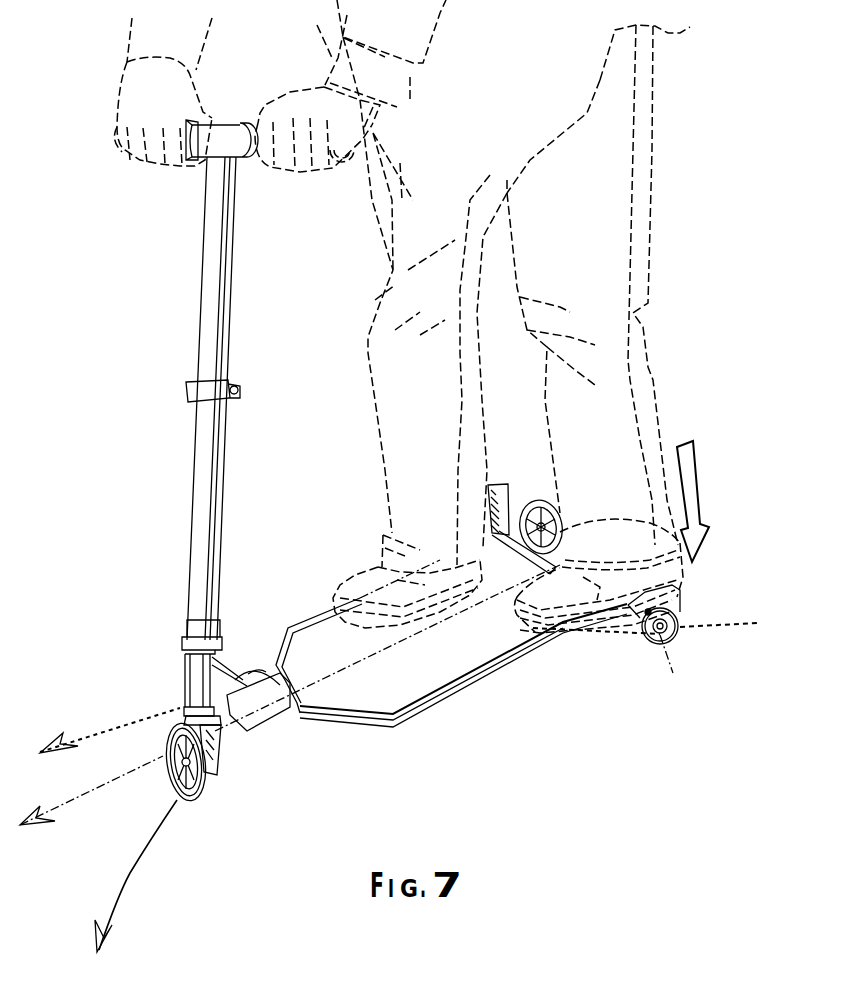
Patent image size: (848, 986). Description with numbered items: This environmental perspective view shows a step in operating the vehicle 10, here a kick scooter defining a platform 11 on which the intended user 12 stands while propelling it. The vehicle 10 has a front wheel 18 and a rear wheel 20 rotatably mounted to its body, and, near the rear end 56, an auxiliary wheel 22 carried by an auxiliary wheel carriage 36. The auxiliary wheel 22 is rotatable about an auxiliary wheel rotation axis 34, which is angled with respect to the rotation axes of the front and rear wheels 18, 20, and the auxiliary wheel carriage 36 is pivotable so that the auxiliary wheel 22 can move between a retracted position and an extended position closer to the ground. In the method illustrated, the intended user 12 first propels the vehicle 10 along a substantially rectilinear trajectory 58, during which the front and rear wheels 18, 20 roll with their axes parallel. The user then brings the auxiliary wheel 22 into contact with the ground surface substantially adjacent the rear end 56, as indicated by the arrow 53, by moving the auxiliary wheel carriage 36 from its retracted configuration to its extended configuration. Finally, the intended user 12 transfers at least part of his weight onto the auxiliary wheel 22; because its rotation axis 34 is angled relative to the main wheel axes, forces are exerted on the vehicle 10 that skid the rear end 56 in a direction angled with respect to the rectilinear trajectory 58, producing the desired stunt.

The vehicle 10 is at (112, 423).
The platform 11 is at (372, 692).
The intended user 12 is at (640, 230).
The front wheel 18 is at (190, 800).
The rear wheel 20 is at (503, 530).
The auxiliary wheel 22 is at (673, 633).
The auxiliary wheel rotation axis 34 is at (673, 660).
The auxiliary wheel carriage 36 is at (692, 602).
The arrow 53 is at (688, 478).
The rear end 56 is at (547, 503).
The rectilinear trajectory 58 is at (82, 800).